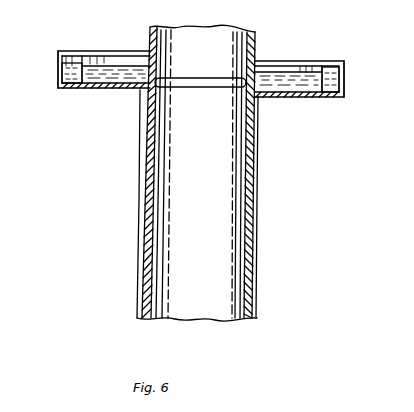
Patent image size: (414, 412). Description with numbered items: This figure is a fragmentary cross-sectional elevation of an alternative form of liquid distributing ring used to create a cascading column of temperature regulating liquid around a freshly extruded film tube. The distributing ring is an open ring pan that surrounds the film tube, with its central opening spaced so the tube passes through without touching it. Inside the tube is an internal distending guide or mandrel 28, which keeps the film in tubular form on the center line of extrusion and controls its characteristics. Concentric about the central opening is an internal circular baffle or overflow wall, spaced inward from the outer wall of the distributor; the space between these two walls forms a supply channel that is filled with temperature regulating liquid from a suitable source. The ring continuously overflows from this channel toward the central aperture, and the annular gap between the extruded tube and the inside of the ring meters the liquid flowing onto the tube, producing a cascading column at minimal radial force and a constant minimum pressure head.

The internal distending guide or mandrel 28 is at (188, 78).